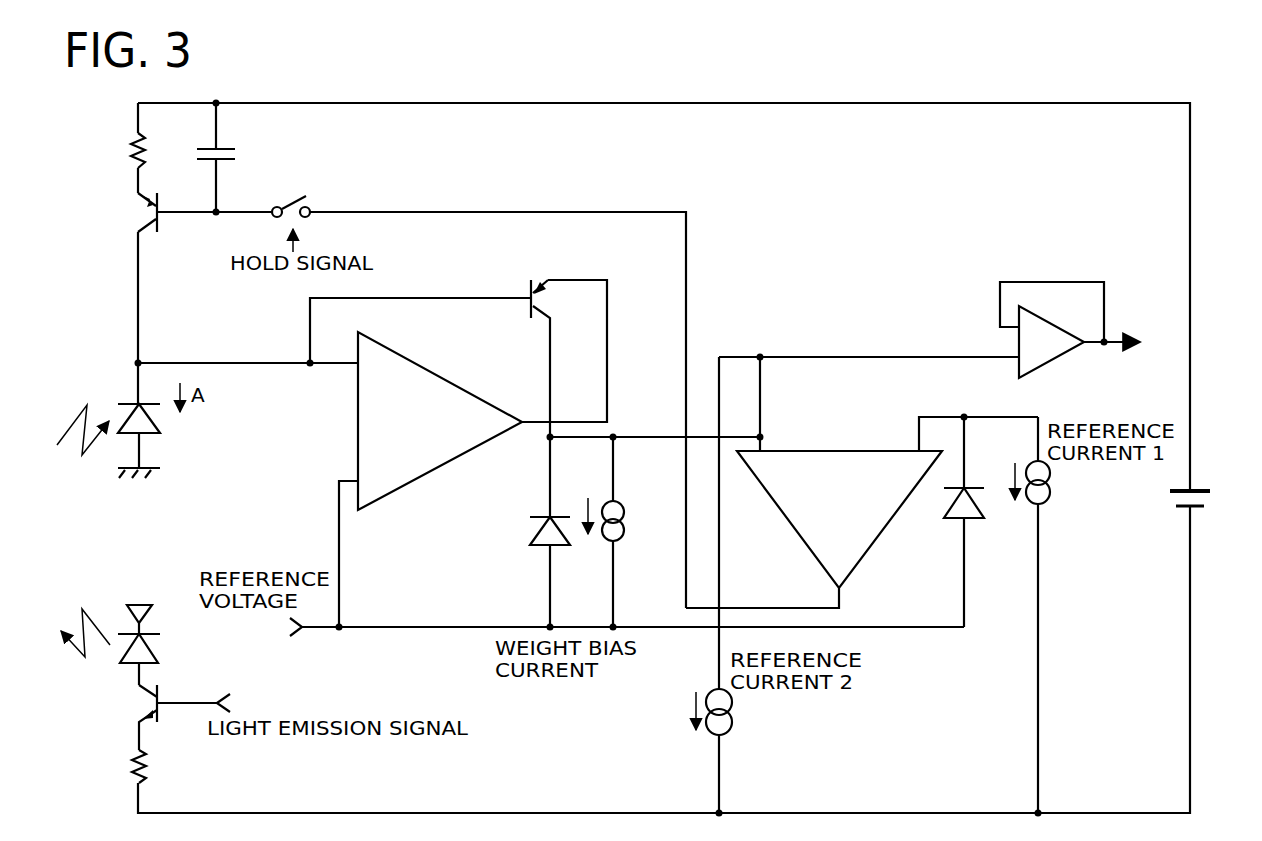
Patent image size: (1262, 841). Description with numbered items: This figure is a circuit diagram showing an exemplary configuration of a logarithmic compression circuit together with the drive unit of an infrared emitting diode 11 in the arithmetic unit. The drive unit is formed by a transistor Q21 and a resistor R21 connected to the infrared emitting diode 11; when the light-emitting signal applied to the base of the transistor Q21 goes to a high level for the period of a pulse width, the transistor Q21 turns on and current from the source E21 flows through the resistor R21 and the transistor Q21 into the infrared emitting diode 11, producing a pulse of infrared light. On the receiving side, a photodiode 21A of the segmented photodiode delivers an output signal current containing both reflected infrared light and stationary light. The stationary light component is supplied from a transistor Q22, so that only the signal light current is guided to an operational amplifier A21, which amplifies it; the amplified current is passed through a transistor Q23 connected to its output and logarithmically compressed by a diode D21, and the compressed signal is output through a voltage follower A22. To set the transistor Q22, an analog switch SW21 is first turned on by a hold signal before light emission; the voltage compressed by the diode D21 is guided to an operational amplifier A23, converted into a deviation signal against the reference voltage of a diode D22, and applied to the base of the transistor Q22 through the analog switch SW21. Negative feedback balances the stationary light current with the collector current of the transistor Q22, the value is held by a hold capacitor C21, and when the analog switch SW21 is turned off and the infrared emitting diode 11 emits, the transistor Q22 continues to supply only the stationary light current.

The transistor Q22 is at (138, 211).
The hold capacitor C21 is at (243, 152).
The analog switch SW21 is at (374, 209).
The transistor Q23 is at (537, 282).
The photodiode 21A is at (121, 399).
The operational amplifier A21 is at (455, 462).
The diode for logarithmic compression D21 is at (535, 532).
The voltage follower A22 is at (1050, 326).
The operational amplifier A23 is at (784, 518).
The diode D22 is at (975, 482).
The source E21 is at (1203, 486).
The infrared emitting diode 11 is at (165, 634).
The transistor Q21 is at (138, 701).
The resistor R21 is at (157, 766).